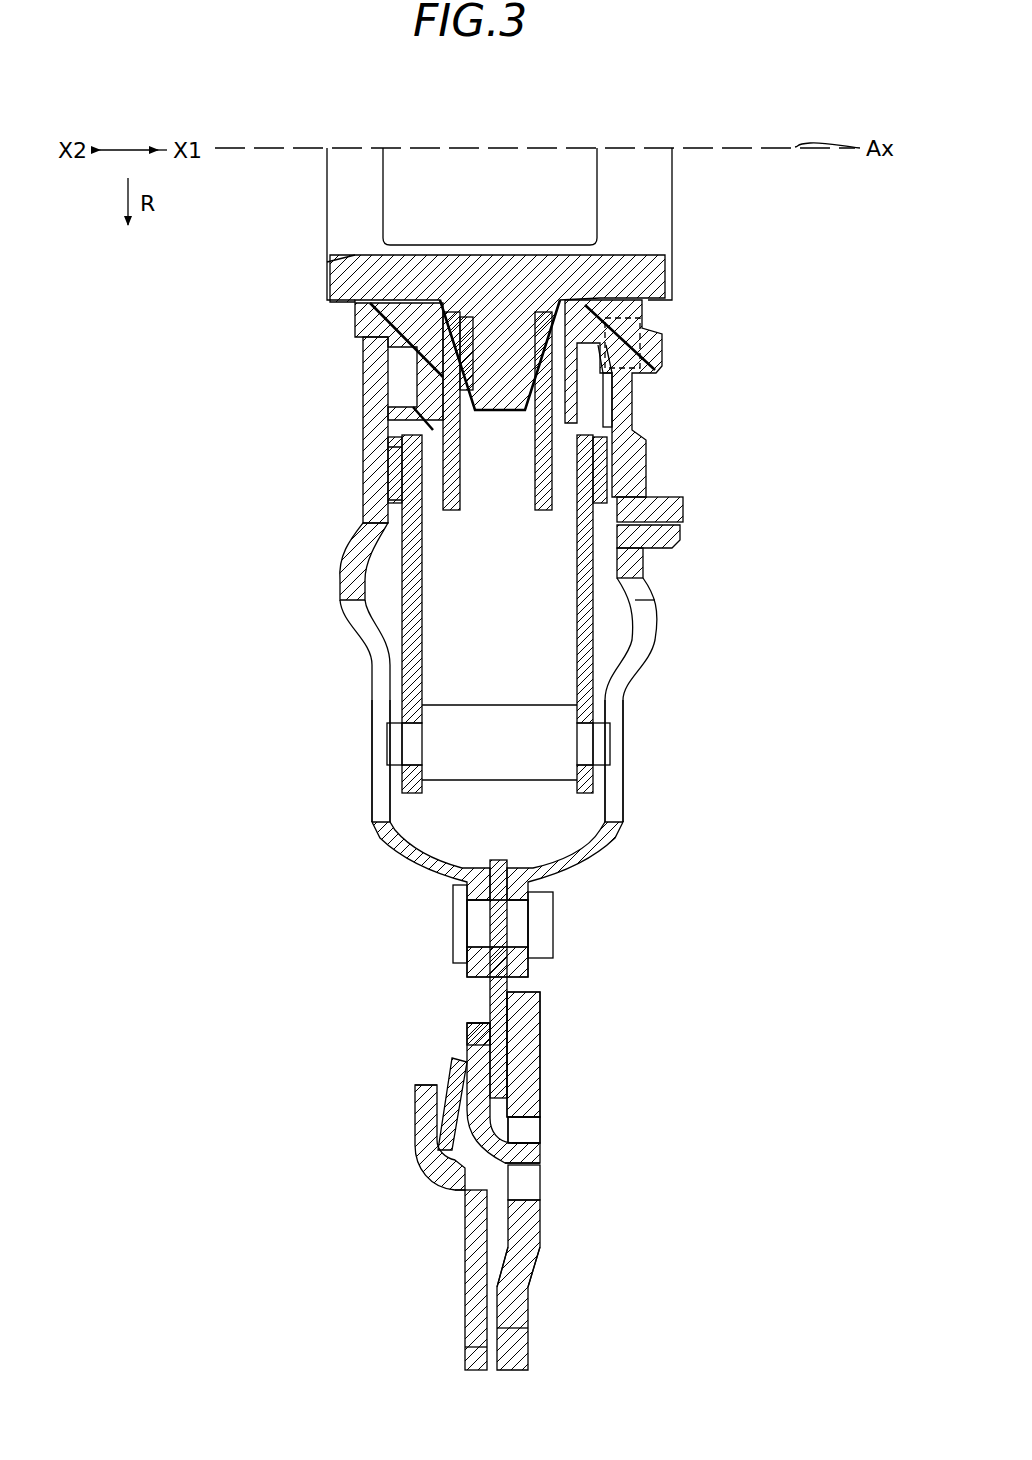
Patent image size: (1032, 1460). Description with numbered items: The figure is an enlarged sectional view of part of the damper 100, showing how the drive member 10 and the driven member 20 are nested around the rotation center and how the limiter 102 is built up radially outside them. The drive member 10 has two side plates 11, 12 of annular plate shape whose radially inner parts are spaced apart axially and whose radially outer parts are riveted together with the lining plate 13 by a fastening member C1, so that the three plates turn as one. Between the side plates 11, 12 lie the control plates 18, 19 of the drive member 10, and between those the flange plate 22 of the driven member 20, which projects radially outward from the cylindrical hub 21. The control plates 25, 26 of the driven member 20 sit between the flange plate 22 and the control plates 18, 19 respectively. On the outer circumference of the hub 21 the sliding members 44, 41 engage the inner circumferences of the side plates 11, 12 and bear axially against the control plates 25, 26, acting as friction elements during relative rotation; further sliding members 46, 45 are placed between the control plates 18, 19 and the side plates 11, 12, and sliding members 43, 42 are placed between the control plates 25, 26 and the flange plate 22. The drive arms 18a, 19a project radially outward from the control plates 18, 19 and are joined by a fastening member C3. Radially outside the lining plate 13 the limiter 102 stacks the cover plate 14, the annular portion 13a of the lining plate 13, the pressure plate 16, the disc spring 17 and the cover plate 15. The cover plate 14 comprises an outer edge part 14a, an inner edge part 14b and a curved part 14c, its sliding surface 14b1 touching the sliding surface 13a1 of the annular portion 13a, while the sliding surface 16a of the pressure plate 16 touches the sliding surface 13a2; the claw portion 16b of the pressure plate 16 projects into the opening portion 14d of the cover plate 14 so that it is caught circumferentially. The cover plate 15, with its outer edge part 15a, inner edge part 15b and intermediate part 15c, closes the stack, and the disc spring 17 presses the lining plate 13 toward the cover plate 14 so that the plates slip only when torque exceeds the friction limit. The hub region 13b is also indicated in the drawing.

The damper 100 is at (660, 110).
The driven member 20 is at (499, 224).
The hub 21 is at (617, 272).
The flange plate 22 is at (560, 366).
The sliding member 44 is at (405, 313).
The sliding member 43 is at (380, 352).
The sliding member 42 is at (597, 312).
The sliding member 41 is at (608, 390).
The sliding member 45 is at (667, 508).
The sliding member 46 is at (398, 478).
The control plate 25 is at (412, 450).
The control plate 26 is at (550, 455).
The control plate 18 is at (385, 578).
The control plate 19 is at (592, 590).
The drive arm 18a is at (412, 695).
The drive arm 19a is at (598, 690).
The fastening member C3 is at (450, 748).
The side plate 11 is at (388, 838).
The side plate 12 is at (606, 852).
The drive member 10 is at (370, 915).
The lining plate 13 is at (498, 979).
The shaft upper portion 13b is at (500, 884).
The fastening member C1 is at (505, 922).
The annular portion 13a is at (523, 1054).
The sliding surface 13a1 is at (515, 1024).
The sliding surface 13a2 is at (485, 1030).
The limiter 102 is at (604, 1068).
The pressure plate 16 is at (473, 1122).
The sliding surface 16a is at (487, 1057).
The claw portion 16b is at (522, 1134).
The inner edge part 14b is at (524, 1130).
The sliding surface 14b1 is at (520, 1086).
The disc spring 17 is at (457, 1080).
The opening portion 14d is at (522, 1184).
The cover plate 14 is at (530, 1328).
The curved part 14c is at (532, 1258).
The outer edge part 14a is at (495, 1350).
The cover plate 15 is at (465, 1270).
The outer edge part 15a is at (528, 1340).
The inner edge part 15b is at (428, 1133).
The intermediate part 15c is at (463, 1192).